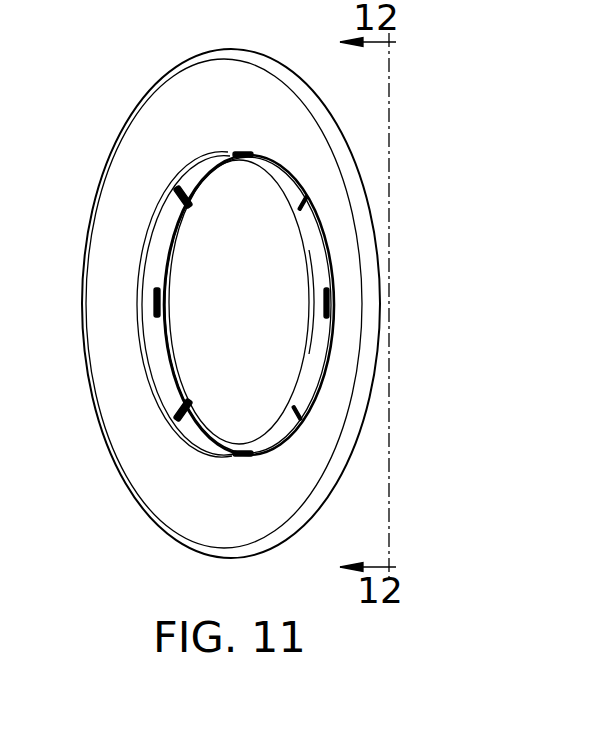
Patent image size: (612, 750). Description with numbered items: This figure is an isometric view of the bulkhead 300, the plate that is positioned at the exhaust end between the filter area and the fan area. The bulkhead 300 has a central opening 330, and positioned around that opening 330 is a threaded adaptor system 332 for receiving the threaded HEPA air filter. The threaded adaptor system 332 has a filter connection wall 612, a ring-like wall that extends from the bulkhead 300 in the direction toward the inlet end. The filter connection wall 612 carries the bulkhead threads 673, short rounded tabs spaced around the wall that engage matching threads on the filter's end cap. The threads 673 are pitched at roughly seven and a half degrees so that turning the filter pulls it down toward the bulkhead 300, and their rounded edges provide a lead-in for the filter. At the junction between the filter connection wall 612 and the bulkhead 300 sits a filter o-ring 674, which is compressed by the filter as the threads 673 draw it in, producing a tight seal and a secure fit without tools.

The bulkhead 300 is at (325, 423).
The opening 330 is at (260, 304).
The threaded adaptor system 332 is at (313, 360).
The filter connection wall 612 is at (313, 255).
The threads 673 is at (334, 307).
The filter o-ring 674 is at (334, 362).